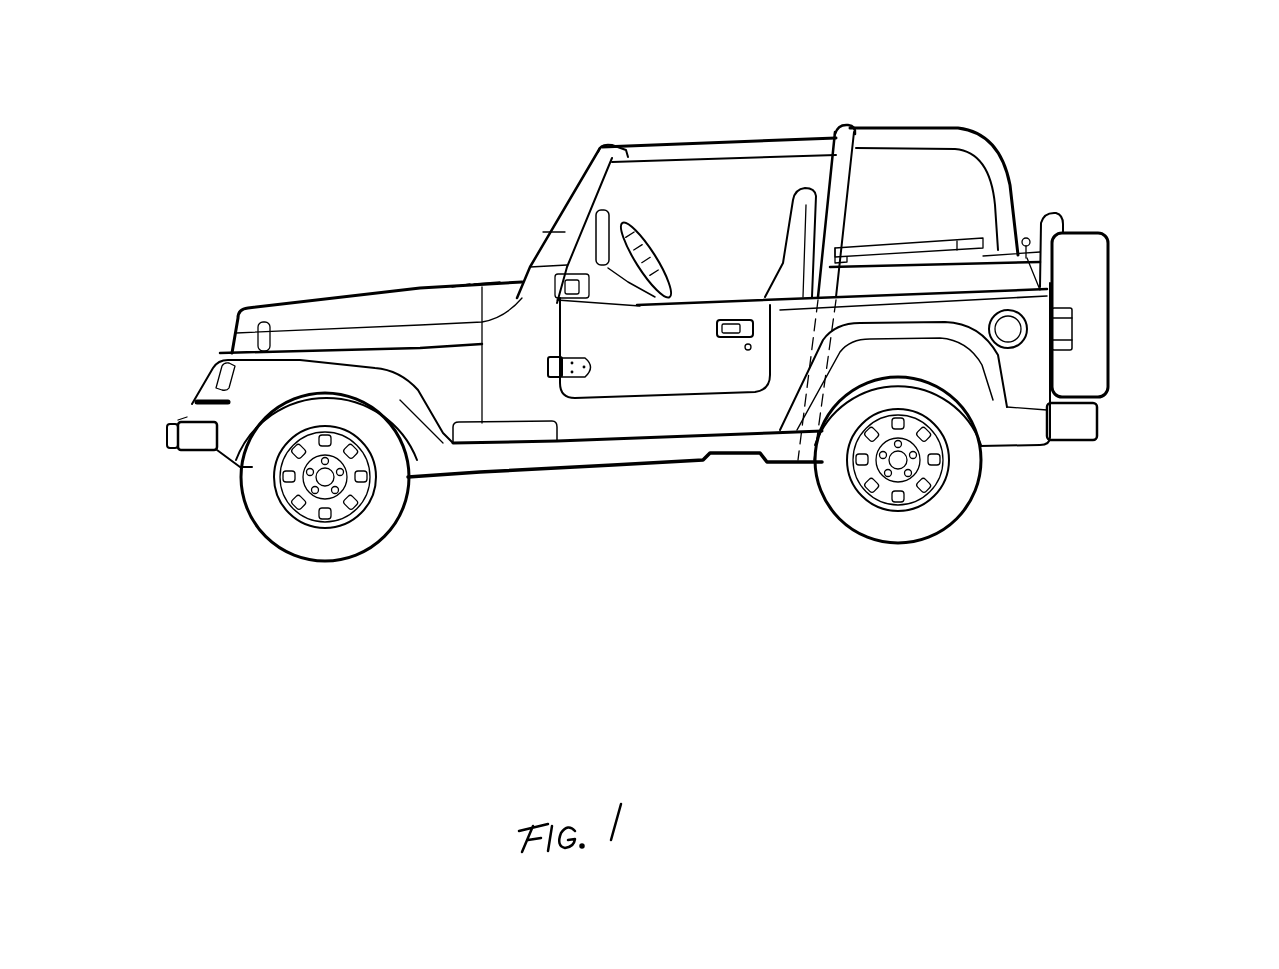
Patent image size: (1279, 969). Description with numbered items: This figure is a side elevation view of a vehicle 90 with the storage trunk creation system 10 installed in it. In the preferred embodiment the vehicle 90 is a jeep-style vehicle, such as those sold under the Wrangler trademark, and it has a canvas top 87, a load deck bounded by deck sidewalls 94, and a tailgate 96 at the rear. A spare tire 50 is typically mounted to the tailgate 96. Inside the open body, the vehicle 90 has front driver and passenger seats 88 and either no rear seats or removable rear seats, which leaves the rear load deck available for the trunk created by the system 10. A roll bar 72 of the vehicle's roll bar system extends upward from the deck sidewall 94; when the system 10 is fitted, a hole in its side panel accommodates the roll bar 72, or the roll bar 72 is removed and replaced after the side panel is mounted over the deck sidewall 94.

The storage trunk creation system 10 is at (931, 106).
The spare tire 50 is at (1106, 233).
The roll bar 72 is at (1003, 160).
The canvas top 87 is at (754, 138).
The front driver and passenger seats 88 is at (793, 235).
The vehicle 90 is at (480, 250).
The deck sidewall 94 is at (1027, 375).
The tailgate 96 is at (1055, 361).